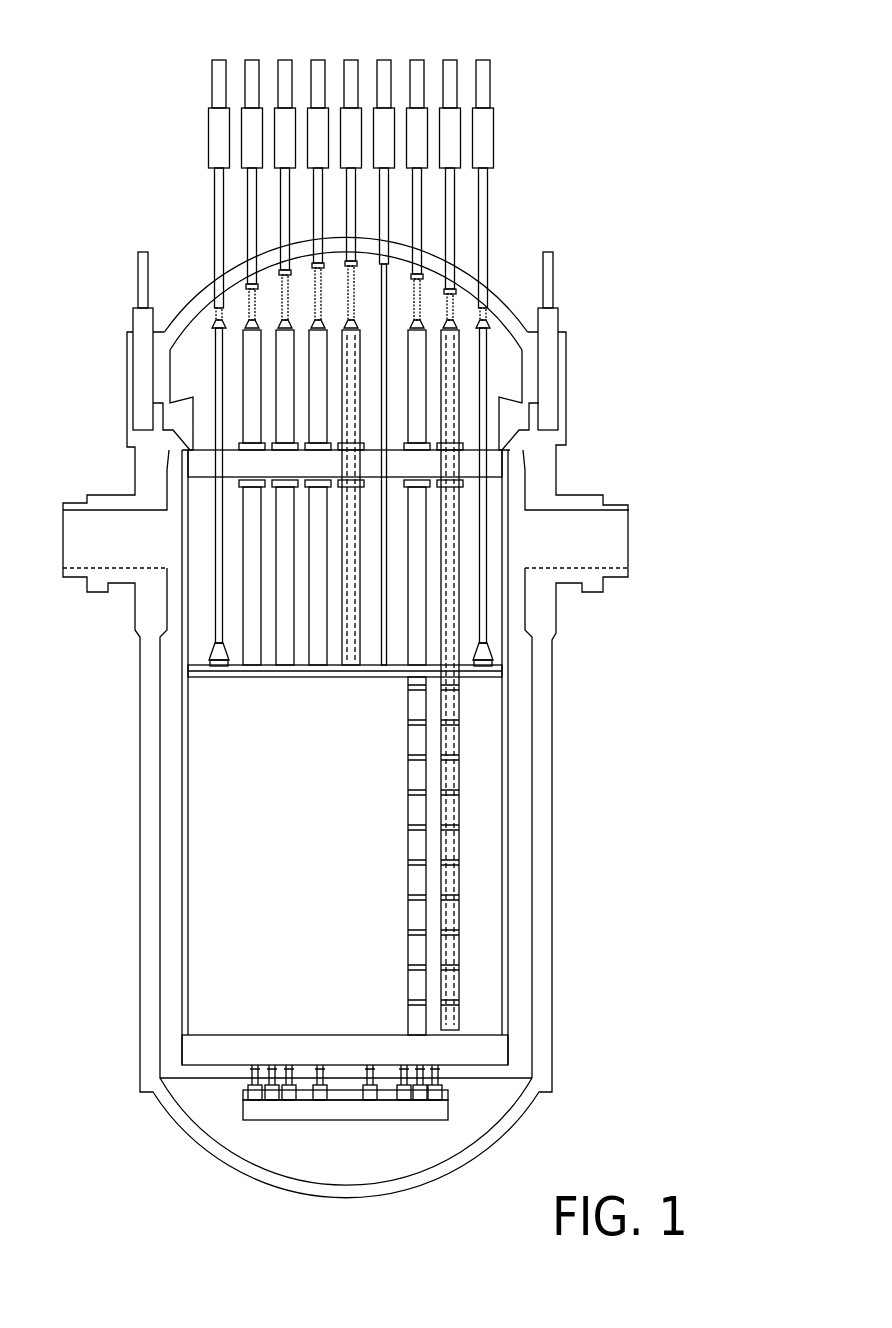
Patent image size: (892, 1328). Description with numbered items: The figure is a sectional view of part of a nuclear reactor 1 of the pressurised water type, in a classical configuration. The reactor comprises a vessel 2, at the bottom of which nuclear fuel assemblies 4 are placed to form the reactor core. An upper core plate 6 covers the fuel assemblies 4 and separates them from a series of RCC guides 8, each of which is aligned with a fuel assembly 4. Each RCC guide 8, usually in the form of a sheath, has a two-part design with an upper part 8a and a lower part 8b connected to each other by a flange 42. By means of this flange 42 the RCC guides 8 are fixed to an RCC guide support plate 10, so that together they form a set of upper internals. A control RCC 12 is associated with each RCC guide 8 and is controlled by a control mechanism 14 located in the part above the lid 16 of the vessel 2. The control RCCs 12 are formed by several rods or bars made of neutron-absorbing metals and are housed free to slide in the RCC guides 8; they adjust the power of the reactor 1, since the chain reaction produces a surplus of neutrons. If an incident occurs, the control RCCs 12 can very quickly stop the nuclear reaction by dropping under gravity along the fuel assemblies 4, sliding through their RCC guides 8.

The nuclear reactor 1 is at (126, 85).
The vessel 2 is at (558, 885).
The nuclear fuel assemblies 4 is at (413, 813).
The upper core plate 6 is at (465, 655).
The RCC guides 8 is at (363, 646).
The upper part 8a is at (250, 370).
The lower part 8b is at (245, 578).
The RCC guide support plate 10 is at (463, 468).
The control RCC 12 is at (352, 358).
The control mechanism 14 is at (486, 130).
The lid 16 is at (455, 270).
The flange 42 is at (250, 447).